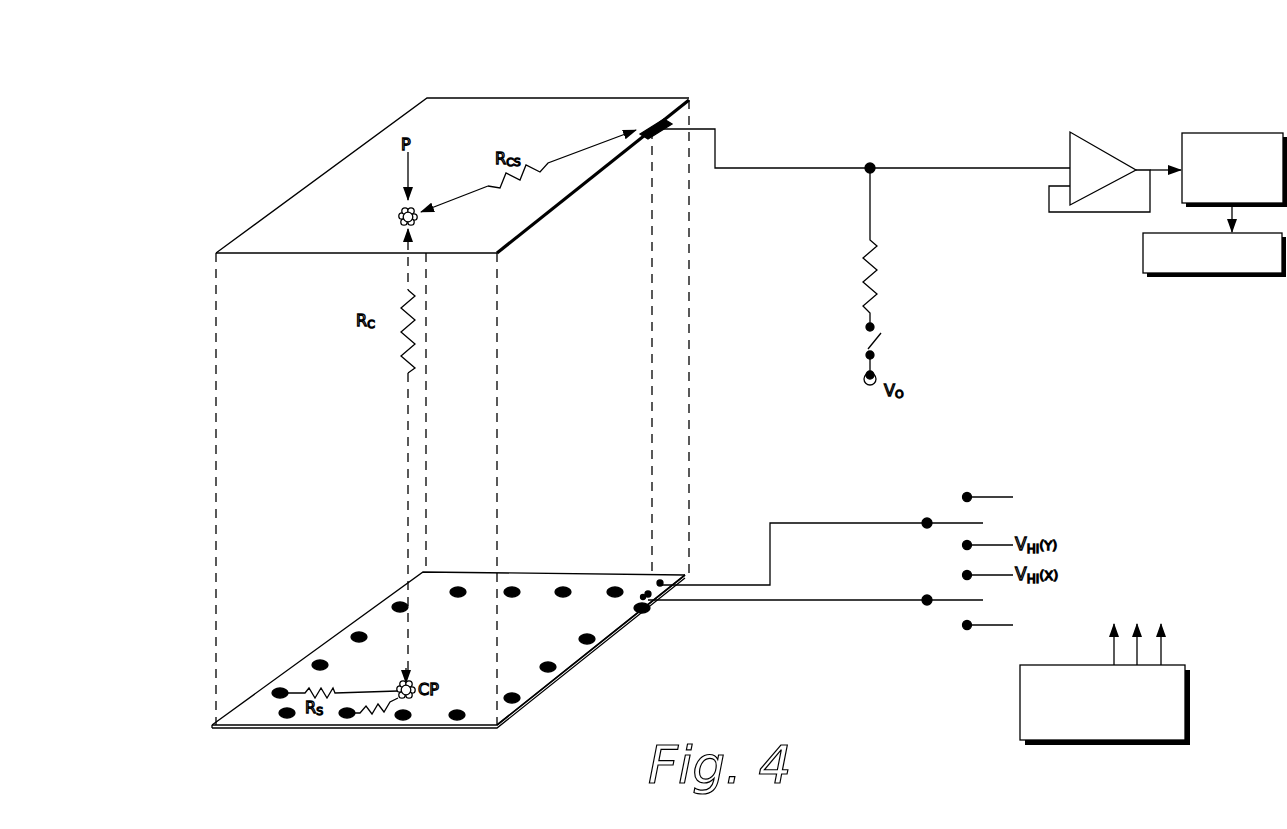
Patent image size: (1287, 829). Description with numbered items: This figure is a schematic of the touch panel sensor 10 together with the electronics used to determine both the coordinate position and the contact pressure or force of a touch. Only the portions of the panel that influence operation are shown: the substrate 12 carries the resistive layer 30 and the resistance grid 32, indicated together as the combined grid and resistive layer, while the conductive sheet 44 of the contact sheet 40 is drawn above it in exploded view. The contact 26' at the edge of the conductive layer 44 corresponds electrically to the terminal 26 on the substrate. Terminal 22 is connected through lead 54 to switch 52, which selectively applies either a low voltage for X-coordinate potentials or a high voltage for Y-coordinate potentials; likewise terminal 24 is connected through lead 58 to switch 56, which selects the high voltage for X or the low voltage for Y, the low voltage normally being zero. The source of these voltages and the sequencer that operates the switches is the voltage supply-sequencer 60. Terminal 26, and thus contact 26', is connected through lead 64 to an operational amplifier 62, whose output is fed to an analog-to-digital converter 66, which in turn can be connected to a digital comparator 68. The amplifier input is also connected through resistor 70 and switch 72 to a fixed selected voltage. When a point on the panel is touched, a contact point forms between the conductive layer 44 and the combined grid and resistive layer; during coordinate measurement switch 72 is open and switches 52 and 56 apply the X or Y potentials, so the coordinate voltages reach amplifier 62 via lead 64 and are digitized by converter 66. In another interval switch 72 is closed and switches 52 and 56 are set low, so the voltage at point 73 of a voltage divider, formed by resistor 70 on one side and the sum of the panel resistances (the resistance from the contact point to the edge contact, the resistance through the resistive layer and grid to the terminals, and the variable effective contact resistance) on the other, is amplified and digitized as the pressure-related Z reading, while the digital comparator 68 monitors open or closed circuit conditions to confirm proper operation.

The lower resistive plate 10 is at (262, 652).
The substrate 12 is at (586, 662).
The terminal 22 is at (657, 580).
The terminal 24 is at (647, 600).
The terminal 26 is at (608, 612).
The contact 26' is at (652, 100).
The resistive layer 30 is at (483, 663).
The resistance grid 32 is at (368, 676).
The contact sheet 40 is at (326, 152).
The conductive sheet 44 is at (530, 229).
The switch 52 is at (976, 479).
The lead 54 is at (837, 521).
The switch 56 is at (949, 626).
The lead 58 is at (788, 601).
The voltage supply-sequencer 60 is at (1107, 741).
The operational amplifier 62 is at (1092, 131).
The lead 64 is at (768, 166).
The analog-to-digital converter 66 is at (1248, 133).
The digital comparator 68 is at (1232, 273).
The resistor 70 is at (862, 298).
The switch 72 is at (884, 345).
The point in voltage divider network 73 is at (870, 163).